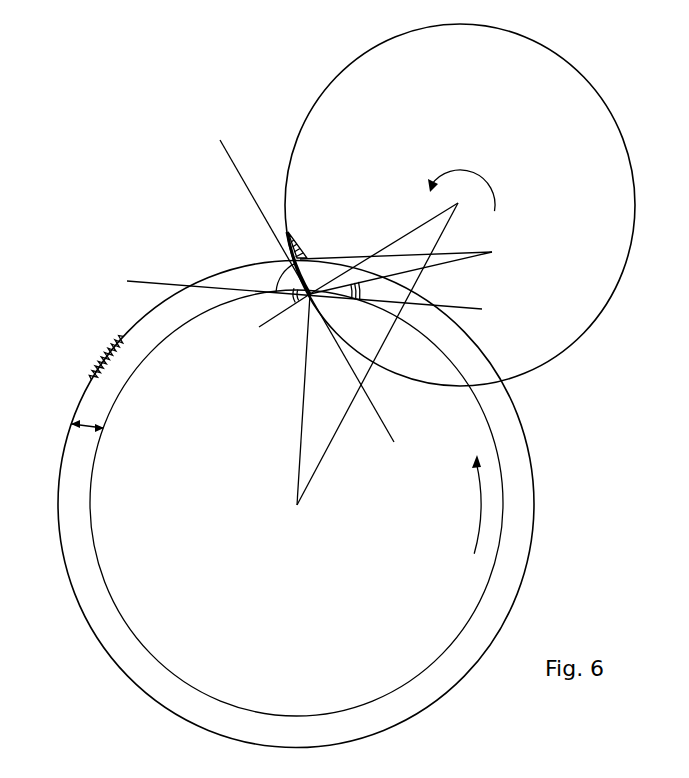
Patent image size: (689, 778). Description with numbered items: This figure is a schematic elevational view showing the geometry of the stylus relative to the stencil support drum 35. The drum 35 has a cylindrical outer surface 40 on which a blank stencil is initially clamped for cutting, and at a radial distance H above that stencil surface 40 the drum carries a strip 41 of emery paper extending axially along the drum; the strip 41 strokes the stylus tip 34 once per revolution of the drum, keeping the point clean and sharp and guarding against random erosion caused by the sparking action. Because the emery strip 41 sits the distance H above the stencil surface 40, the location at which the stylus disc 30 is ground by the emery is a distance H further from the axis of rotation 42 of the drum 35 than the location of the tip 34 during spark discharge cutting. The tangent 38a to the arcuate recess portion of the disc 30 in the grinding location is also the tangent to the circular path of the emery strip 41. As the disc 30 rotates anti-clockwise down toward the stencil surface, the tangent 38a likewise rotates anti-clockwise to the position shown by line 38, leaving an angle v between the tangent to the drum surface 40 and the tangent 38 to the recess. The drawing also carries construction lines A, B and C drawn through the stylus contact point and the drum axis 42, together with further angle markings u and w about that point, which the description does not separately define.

The stylus disc 30 is at (310, 123).
The stencil support drum 35 is at (106, 652).
The cylindrical outer surface 40 is at (98, 573).
The strip of emery paper 41 is at (100, 369).
The radial distance H is at (77, 426).
The tangent to the arcuate recess portion 38a is at (340, 257).
The line through roller center B is at (382, 250).
The tangent to the recess 38 is at (272, 322).
The stylus tip 34 is at (310, 294).
The line to cylinder center C is at (303, 390).
The tangent line A is at (366, 374).
The axis of rotation 42 is at (298, 506).
The angle u is at (276, 277).
The angle v is at (309, 280).
The angle w is at (282, 302).